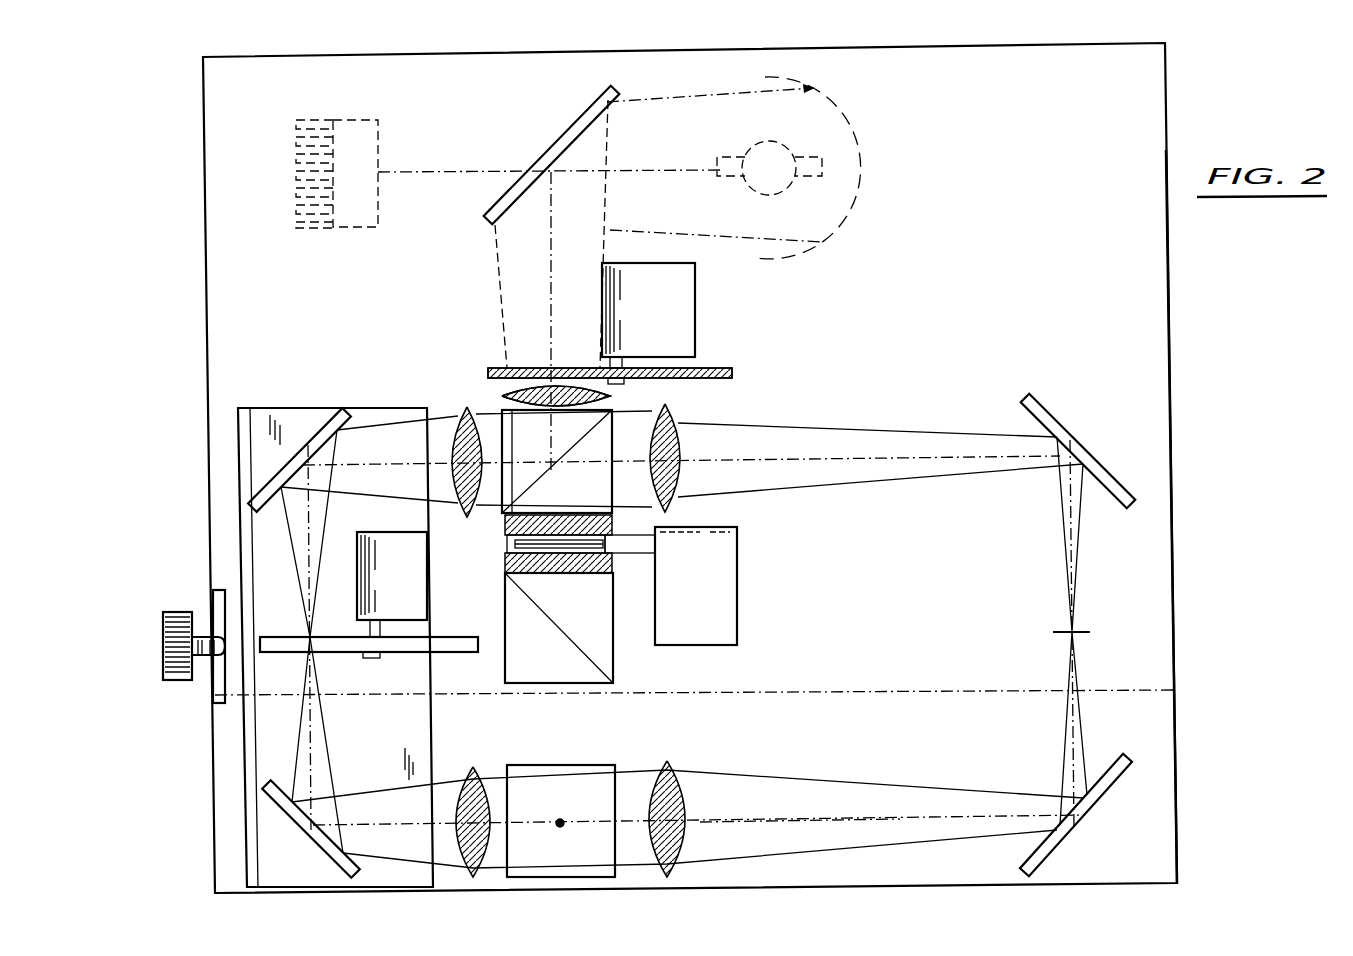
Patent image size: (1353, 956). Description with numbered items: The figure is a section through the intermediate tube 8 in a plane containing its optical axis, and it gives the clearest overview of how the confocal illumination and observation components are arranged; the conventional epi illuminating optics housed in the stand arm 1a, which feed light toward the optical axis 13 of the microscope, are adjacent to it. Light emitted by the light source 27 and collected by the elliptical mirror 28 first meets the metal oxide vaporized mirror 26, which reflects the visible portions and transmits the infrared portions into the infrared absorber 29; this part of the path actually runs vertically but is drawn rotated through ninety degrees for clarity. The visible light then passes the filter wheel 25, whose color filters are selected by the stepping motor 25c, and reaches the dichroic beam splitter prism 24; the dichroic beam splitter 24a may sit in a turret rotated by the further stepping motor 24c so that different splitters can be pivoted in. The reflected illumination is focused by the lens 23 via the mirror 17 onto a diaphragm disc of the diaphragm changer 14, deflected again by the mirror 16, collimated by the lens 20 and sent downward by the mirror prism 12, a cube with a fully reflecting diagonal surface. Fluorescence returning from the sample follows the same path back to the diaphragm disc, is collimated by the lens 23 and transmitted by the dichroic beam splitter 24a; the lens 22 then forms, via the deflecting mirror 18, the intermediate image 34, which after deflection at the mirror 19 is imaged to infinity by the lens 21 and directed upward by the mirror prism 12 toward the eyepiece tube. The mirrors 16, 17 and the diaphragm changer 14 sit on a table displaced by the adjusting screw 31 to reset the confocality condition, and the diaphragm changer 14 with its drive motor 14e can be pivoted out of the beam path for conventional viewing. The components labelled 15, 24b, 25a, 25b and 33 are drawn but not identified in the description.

The intermediate tube 8 is at (883, 45).
The stand arm 1a is at (1175, 810).
The mirror prism 12 is at (540, 785).
The optical axis 13 is at (561, 818).
The diaphragm changer 14 is at (345, 645).
The drive motor 14e is at (420, 578).
The optical axis 15 is at (790, 818).
The mirror 16 is at (319, 843).
The mirror 17 is at (339, 408).
The deflecting mirror 18 is at (1062, 430).
The mirror 19 is at (1088, 813).
The lens 20 is at (473, 770).
The lens 21 is at (668, 767).
The lens 22 is at (667, 476).
The lens 23 is at (460, 412).
The dichroic beam splitter prism 24 is at (629, 567).
The dichroic beam splitter 24a is at (513, 490).
The beam splitter cube 24b is at (527, 663).
The stepping motor 24c is at (717, 608).
The filter wheel 25 is at (737, 370).
The lens 25a is at (530, 368).
The filter 25b is at (708, 380).
The stepping motor 25c is at (680, 318).
The metal oxide vaporized mirror 26 is at (567, 130).
The light source 27 is at (780, 158).
The elliptical mirror 28 is at (853, 212).
The infrared absorber 29 is at (354, 122).
The adjusting screw 31 is at (183, 678).
The lens 33 is at (500, 397).
The intermediate image 34 is at (1062, 632).